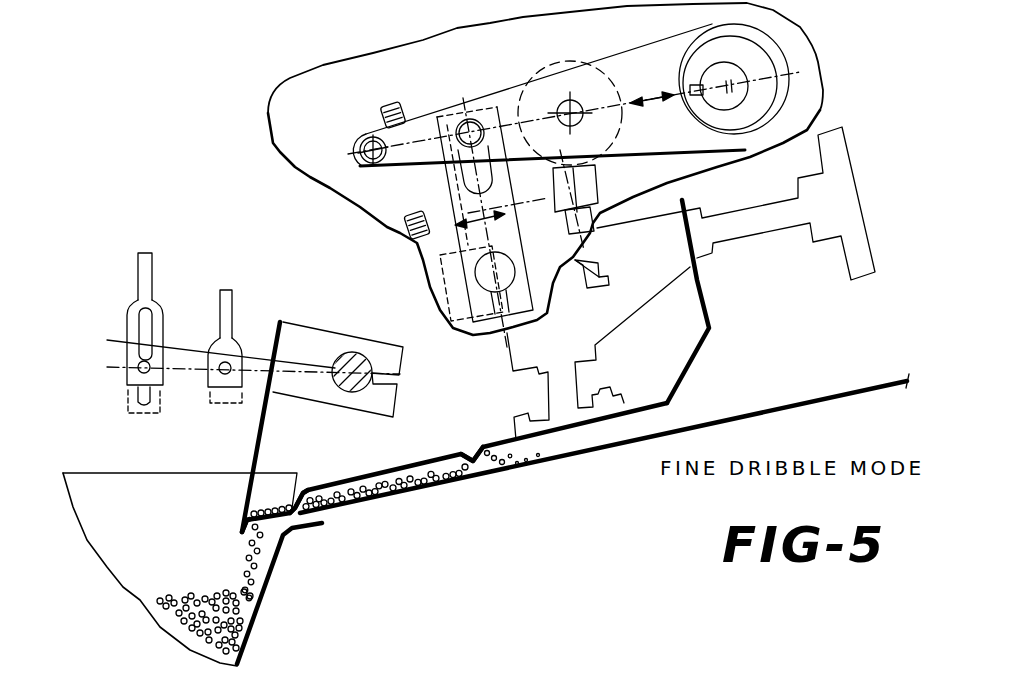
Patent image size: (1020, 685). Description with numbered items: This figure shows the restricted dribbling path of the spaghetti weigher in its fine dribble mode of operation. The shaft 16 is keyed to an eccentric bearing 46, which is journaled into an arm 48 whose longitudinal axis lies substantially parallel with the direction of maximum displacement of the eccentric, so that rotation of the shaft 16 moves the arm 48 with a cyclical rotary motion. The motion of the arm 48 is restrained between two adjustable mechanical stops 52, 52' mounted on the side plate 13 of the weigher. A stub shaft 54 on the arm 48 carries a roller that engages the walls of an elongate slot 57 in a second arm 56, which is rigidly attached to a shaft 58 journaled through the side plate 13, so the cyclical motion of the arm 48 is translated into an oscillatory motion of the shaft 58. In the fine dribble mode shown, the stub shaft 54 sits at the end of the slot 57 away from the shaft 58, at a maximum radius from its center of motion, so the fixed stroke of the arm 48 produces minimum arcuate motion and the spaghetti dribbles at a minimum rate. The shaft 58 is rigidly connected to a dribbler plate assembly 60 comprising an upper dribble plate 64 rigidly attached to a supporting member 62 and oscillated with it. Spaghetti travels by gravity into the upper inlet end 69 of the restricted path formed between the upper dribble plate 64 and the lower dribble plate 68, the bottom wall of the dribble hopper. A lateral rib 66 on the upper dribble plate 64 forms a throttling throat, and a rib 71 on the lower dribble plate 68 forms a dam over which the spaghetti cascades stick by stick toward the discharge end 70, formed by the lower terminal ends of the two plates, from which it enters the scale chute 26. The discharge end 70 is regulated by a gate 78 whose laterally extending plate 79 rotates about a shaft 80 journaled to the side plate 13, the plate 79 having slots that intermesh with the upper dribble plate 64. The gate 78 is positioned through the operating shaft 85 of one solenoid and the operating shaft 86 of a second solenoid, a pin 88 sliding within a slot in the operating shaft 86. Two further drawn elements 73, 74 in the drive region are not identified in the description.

The side plate 13 is at (312, 80).
The shaft 16 is at (743, 80).
The scale chute 26 is at (255, 621).
The eccentric bearing 46 is at (767, 94).
The arm 48 is at (647, 52).
The adjustable mechanical stop 52 is at (374, 104).
The adjustable mechanical stop 52' is at (385, 226).
The stub shaft 54 is at (470, 118).
The second arm 56 is at (460, 228).
The elongate slot 57 is at (461, 180).
The shaft 58 is at (474, 270).
The dribbler plate assembly 60 is at (770, 333).
The supporting member 62 is at (600, 333).
The upper dribble plate 64 is at (701, 343).
The lateral rib 66 is at (472, 454).
The lower dribble plate 68 is at (593, 452).
The upper inlet end 69 is at (683, 410).
The discharge end 70 is at (248, 538).
The rib 71 is at (352, 507).
The idler pulley 73 is at (569, 66).
The belt tensioner 74 is at (597, 192).
The gate 78 is at (258, 440).
The laterally extending plate 79 is at (240, 505).
The shaft 80 is at (350, 392).
The operating shaft 85 is at (233, 303).
The operating shaft 86 is at (150, 297).
The pin 88 is at (138, 367).